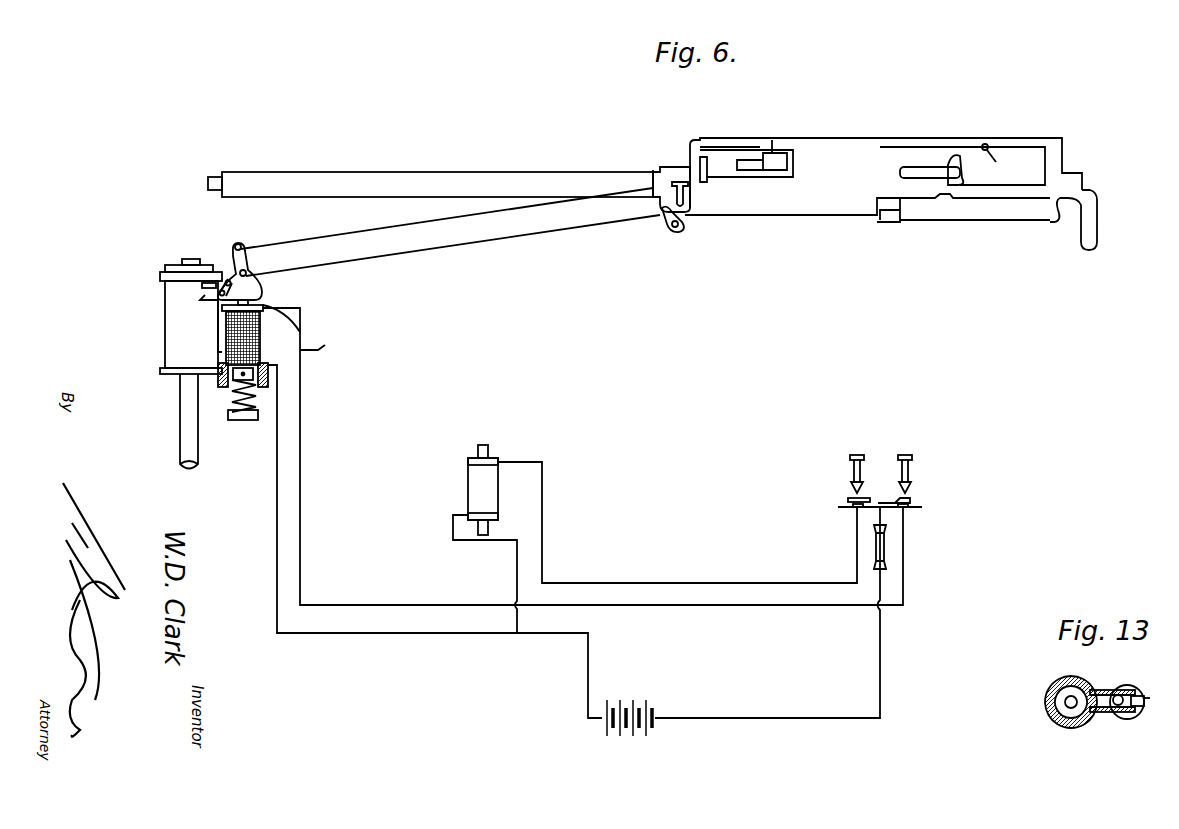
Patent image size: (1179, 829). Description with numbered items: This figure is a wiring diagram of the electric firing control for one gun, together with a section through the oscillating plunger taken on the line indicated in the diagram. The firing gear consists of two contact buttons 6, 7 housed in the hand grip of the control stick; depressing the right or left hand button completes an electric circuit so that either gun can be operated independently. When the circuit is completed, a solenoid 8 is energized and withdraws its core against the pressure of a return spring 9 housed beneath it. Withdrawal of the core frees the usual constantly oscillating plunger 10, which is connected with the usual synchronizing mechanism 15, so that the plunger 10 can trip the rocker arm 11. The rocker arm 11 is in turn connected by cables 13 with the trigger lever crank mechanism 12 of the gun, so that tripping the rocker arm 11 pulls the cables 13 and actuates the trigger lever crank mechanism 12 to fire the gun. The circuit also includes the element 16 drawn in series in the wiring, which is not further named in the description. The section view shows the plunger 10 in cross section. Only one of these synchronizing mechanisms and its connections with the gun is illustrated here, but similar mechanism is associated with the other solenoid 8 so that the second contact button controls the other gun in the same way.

In FIG. 6, the contact button 6 is at (858, 455).
In FIG. 6, the contact button 7 is at (907, 455).
In FIG. 6, the solenoid 8 is at (300, 332).
In FIG. 6, the return spring 9 is at (247, 405).
In FIG. 13, the plunger 10 is at (1108, 694).
In FIG. 6, the rocker arm 11 is at (245, 253).
In FIG. 13, the rocker arm 11 is at (1147, 700).
In FIG. 6, the trigger lever crank mechanism 12 is at (800, 203).
In FIG. 6, the cables 13 is at (365, 230).
In FIG. 6, the synchronizing mechanism 15 is at (172, 350).
In FIG. 6, the fuse 16 is at (888, 552).